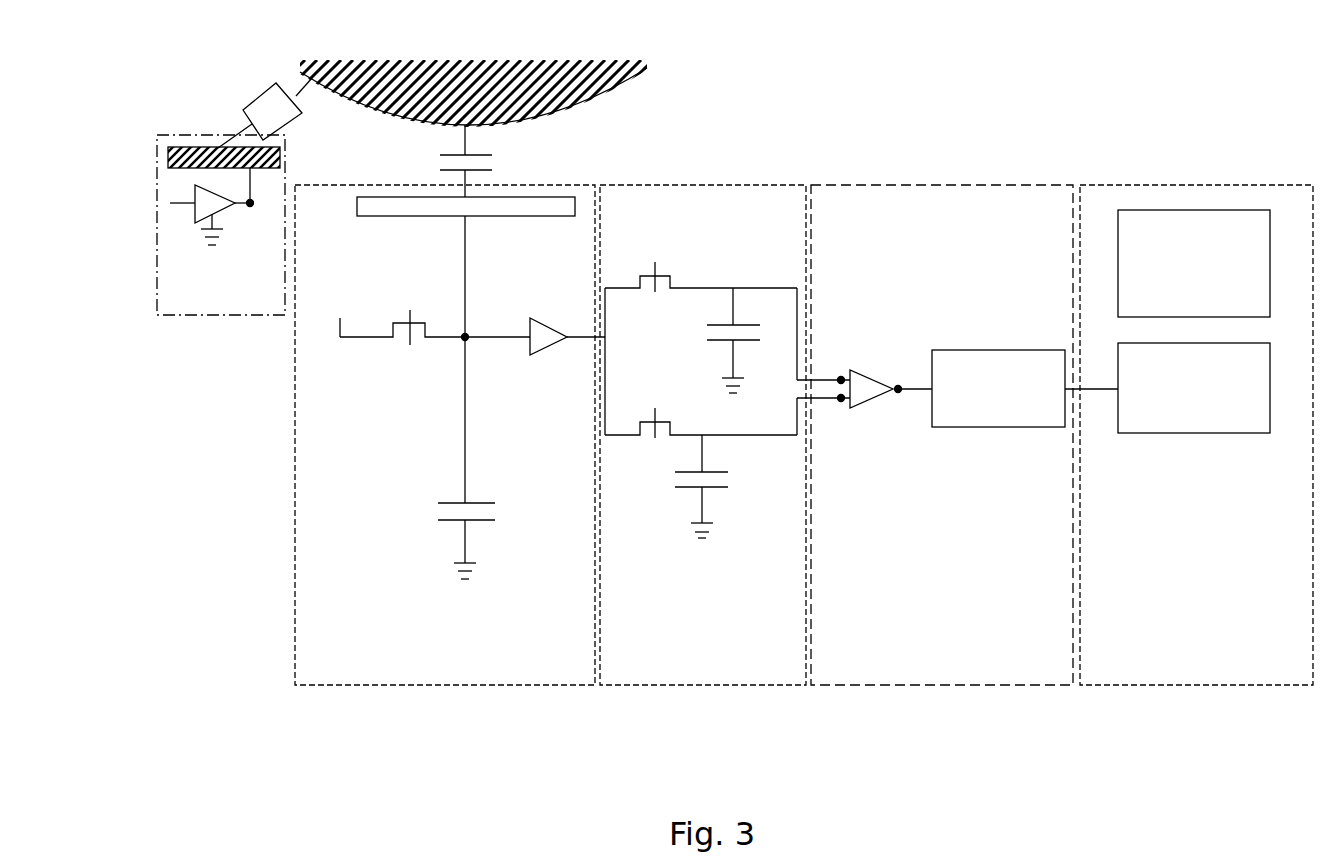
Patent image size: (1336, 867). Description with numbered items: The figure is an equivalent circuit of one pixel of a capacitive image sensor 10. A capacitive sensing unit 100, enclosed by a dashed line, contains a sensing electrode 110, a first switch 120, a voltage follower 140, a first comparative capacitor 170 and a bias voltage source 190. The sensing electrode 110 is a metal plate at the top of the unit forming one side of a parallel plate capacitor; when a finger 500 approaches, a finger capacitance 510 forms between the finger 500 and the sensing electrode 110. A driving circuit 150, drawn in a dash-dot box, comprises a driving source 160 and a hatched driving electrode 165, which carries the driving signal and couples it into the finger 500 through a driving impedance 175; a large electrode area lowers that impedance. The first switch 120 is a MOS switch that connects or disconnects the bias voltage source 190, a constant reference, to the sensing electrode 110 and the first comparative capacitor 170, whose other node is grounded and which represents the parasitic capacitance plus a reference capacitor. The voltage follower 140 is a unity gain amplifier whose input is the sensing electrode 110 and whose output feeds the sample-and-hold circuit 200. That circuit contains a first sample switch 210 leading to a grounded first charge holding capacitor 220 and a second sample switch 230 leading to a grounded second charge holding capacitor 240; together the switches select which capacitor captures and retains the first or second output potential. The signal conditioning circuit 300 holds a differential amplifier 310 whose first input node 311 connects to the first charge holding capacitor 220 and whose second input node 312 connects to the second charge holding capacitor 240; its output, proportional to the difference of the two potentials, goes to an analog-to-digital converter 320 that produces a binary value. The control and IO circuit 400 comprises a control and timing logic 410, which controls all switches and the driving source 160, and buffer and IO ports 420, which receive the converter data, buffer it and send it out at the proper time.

The capacitive image sensor 10 is at (1241, 81).
The capacitive sensing unit 100 is at (345, 687).
The sensing electrode 110 is at (513, 203).
The first switch 120 is at (407, 340).
The voltage follower 140 is at (553, 348).
The driving circuit 150 is at (221, 259).
The driving source 160 is at (222, 213).
The driving electrode 165 is at (198, 147).
The first comparative capacitor 170 is at (485, 521).
The driving impedance 175 is at (268, 88).
The bias voltage source 190 is at (346, 296).
The sample-and-hold circuit 200 is at (688, 687).
The first sample switch 210 is at (665, 273).
The first charge holding capacitor 220 is at (722, 345).
The second sample switch 230 is at (670, 432).
The second charge holding capacitor 240 is at (693, 487).
The signal conditioning circuit 300 is at (930, 687).
The differential amplifier 310 is at (870, 407).
The first input node 311 is at (850, 370).
The second input node 312 is at (841, 400).
The analog-to-digital converter 320 is at (995, 428).
The control and IO circuit 400 is at (1185, 687).
The control and timing logic 410 is at (1194, 263).
The buffer and IO ports 420 is at (1194, 388).
The finger 500 is at (410, 123).
The finger capacitance 510 is at (480, 152).